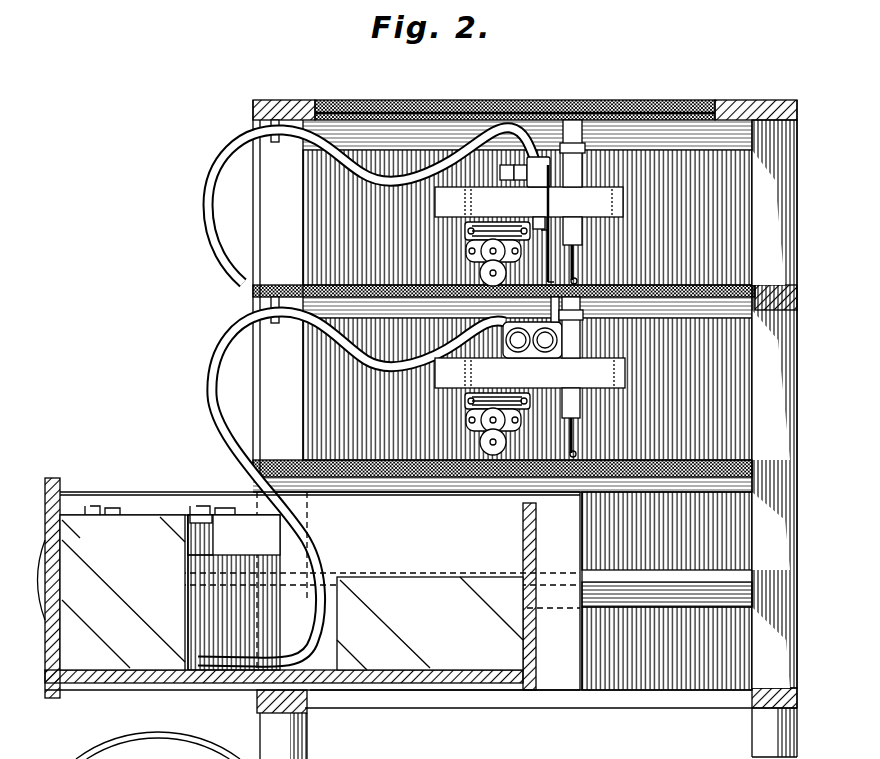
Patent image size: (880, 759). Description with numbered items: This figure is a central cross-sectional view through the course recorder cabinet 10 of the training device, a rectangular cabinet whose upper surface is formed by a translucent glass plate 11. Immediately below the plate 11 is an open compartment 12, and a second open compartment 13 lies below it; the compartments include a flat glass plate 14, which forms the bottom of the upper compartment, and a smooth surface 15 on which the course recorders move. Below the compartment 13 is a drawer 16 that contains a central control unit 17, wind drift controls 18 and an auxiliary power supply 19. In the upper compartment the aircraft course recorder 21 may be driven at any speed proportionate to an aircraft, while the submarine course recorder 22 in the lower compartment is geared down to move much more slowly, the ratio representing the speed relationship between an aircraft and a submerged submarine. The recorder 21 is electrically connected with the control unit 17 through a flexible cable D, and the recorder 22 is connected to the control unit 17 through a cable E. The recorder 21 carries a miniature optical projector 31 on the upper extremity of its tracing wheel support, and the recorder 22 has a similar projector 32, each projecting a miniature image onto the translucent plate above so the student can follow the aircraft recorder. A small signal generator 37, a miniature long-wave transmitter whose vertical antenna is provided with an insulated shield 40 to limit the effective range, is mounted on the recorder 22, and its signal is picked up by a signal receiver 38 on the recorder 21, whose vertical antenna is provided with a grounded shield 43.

The cabinet 10 is at (768, 100).
The translucent glass plate 11 is at (614, 100).
The open compartment 12 is at (282, 206).
The second open compartment 13 is at (282, 381).
The flat glass plate 14 is at (725, 283).
The smooth surface 15 is at (314, 458).
The drawer 16 is at (122, 694).
The central control unit 17 is at (122, 630).
The wind drift controls 18 is at (248, 545).
The auxiliary power supply 19 is at (472, 640).
The aircraft course recorder 21 is at (500, 212).
The submarine course recorder 22 is at (500, 383).
The miniature optical projector 31 is at (580, 139).
The projector 32 is at (575, 356).
The signal generator 37 is at (540, 354).
The signal receiver 38 is at (538, 177).
The insulated shield 40 is at (584, 305).
The grounded shield 43 is at (557, 236).
The flexible cable D is at (202, 228).
The cable E is at (210, 381).